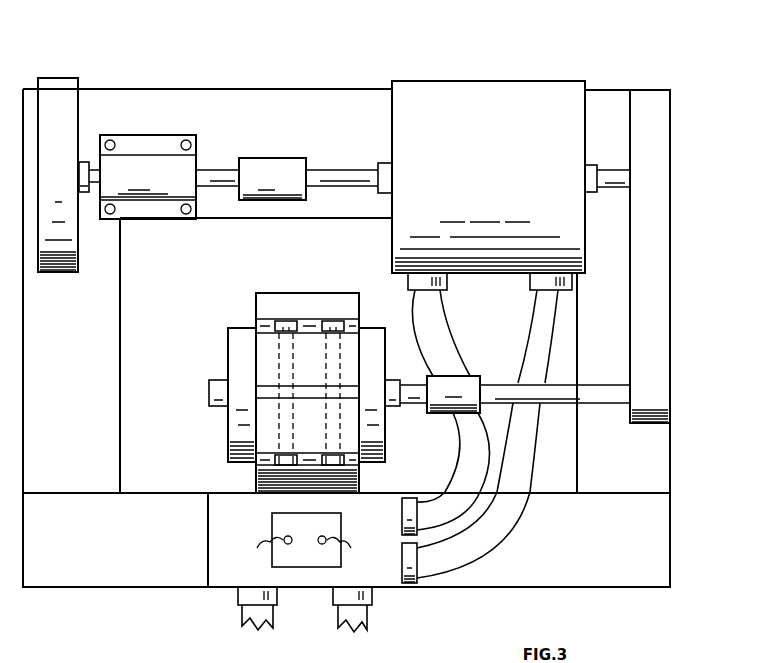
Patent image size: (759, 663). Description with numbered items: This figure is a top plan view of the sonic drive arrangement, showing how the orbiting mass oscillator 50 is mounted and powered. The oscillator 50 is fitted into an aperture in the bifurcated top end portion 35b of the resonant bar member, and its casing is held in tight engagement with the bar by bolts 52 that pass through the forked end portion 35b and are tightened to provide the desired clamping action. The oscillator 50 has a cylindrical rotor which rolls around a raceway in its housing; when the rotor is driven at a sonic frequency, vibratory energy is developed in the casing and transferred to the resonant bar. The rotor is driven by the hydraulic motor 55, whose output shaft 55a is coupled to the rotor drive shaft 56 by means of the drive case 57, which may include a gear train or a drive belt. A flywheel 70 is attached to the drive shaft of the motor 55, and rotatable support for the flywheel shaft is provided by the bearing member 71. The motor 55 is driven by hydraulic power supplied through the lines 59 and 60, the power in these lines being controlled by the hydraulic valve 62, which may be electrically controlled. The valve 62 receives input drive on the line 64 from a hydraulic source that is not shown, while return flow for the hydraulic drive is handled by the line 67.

The flywheel 70 is at (57, 98).
The bearing member 71 is at (163, 145).
The hydraulic motor 55 is at (503, 103).
The output shaft 55a is at (610, 170).
The drive case 57 is at (663, 245).
The bifurcated top end portion 35b is at (263, 342).
The bolts 52 is at (322, 323).
The orbiting mass oscillator 50 is at (235, 370).
The rotor drive shaft 56 is at (422, 388).
The hydraulic line 59 is at (470, 472).
The hydraulic line 60 is at (498, 520).
The hydraulic valve 62 is at (222, 528).
The return line 67 is at (240, 610).
The input drive line 64 is at (357, 617).